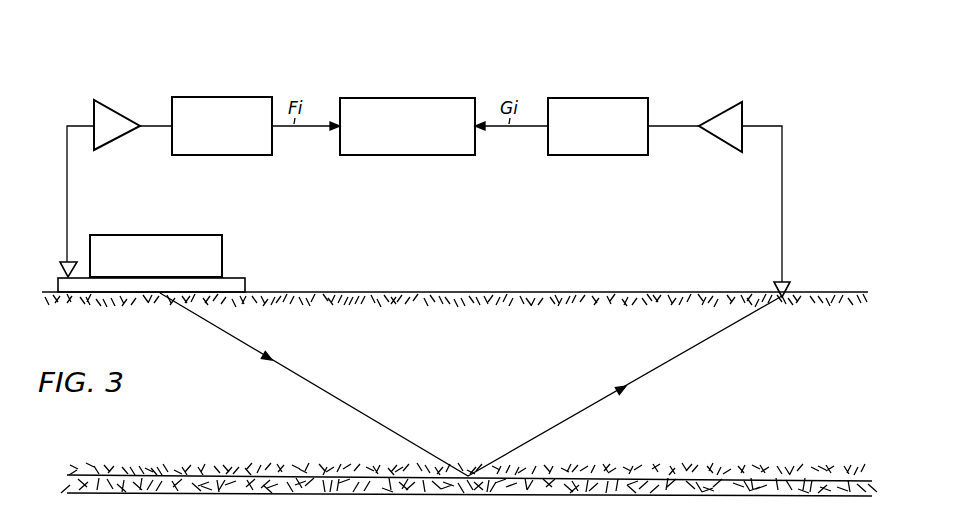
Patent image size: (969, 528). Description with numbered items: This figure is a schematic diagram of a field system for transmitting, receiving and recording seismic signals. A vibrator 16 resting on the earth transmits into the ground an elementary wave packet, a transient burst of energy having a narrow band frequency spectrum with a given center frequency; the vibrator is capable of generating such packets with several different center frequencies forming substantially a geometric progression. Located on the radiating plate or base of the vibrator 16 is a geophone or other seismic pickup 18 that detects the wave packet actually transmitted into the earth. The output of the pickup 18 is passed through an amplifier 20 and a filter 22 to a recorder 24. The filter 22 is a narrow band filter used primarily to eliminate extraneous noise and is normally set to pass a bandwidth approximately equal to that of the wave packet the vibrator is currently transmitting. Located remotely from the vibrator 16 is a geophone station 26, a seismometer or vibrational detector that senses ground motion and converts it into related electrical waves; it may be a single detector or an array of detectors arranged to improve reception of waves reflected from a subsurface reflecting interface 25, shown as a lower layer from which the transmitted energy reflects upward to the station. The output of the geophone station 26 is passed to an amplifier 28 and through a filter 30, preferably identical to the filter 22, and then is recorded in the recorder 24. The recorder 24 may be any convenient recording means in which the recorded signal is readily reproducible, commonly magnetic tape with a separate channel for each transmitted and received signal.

The vibrator 16 is at (191, 235).
The geophone or seismic pickup 18 is at (60, 262).
The amplifier 20 is at (116, 104).
The filter 22 is at (227, 96).
The recorder 24 is at (423, 96).
The subsurface reflecting interface 25 is at (640, 475).
The geophone station 26 is at (790, 280).
The amplifier 28 is at (728, 105).
The filter 30 is at (602, 96).